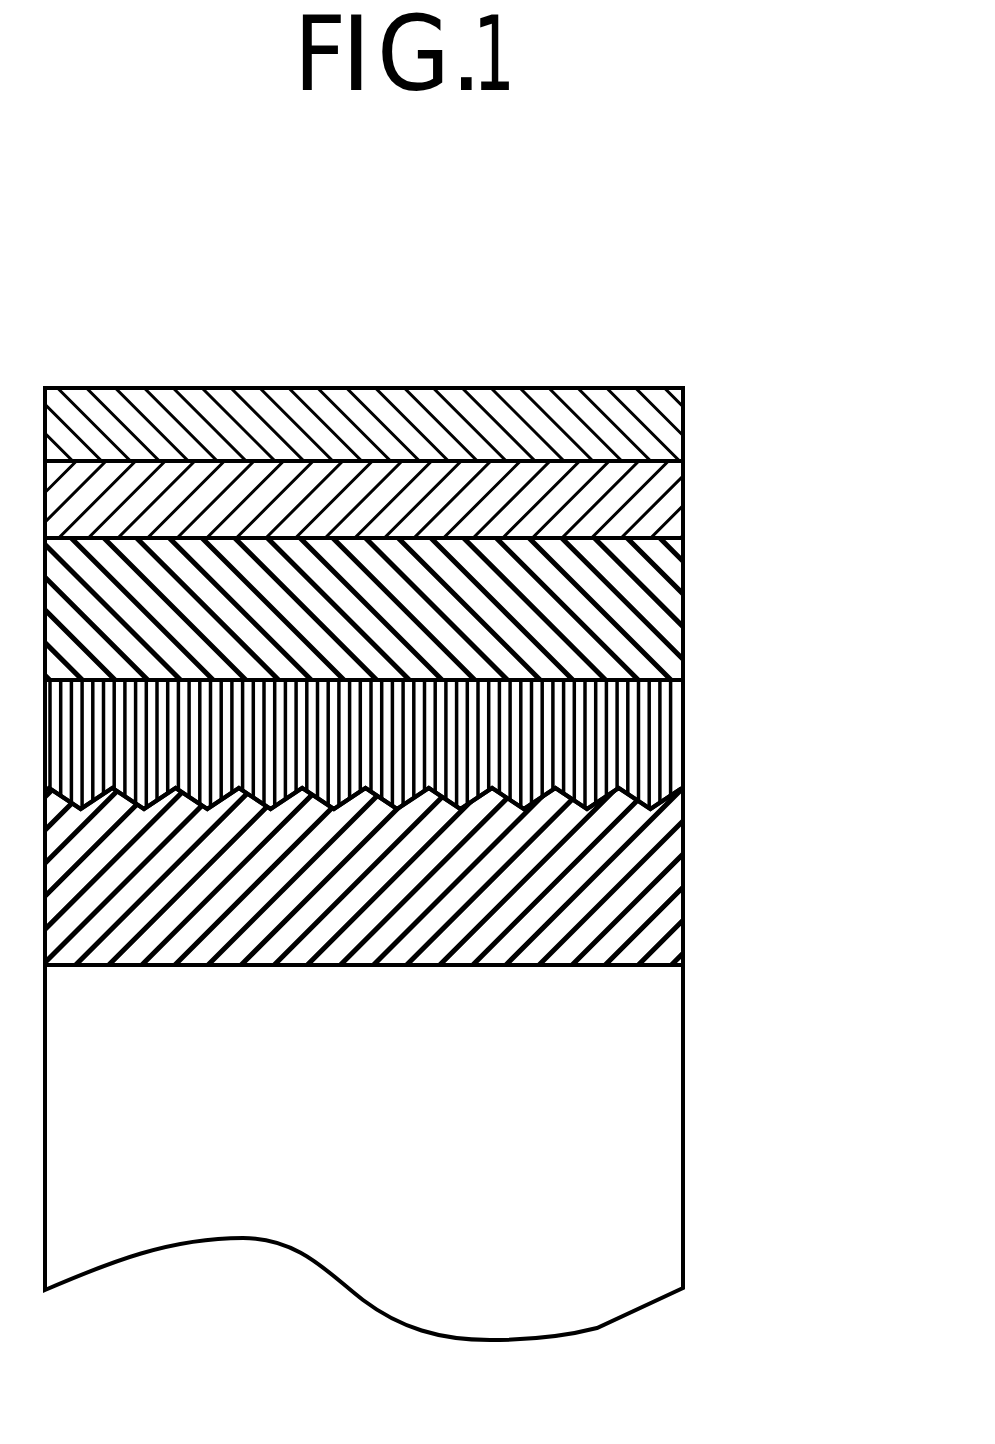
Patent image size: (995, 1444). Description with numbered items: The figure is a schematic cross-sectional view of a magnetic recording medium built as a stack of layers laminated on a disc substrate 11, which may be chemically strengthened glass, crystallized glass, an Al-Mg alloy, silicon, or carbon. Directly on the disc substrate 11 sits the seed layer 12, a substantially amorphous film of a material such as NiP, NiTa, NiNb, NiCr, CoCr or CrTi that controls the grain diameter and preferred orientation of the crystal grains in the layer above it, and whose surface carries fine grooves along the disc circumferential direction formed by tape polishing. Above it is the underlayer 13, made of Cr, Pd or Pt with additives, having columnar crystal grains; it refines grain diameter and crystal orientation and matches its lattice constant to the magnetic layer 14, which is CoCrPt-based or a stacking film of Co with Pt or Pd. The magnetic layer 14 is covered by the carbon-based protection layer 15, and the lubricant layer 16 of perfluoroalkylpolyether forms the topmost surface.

The disc substrate 11 is at (683, 1152).
The seed layer 12 is at (683, 900).
The underlayer 13 is at (683, 740).
The magnetic layer 14 is at (683, 616).
The protection layer 15 is at (683, 503).
The lubricant layer 16 is at (683, 421).